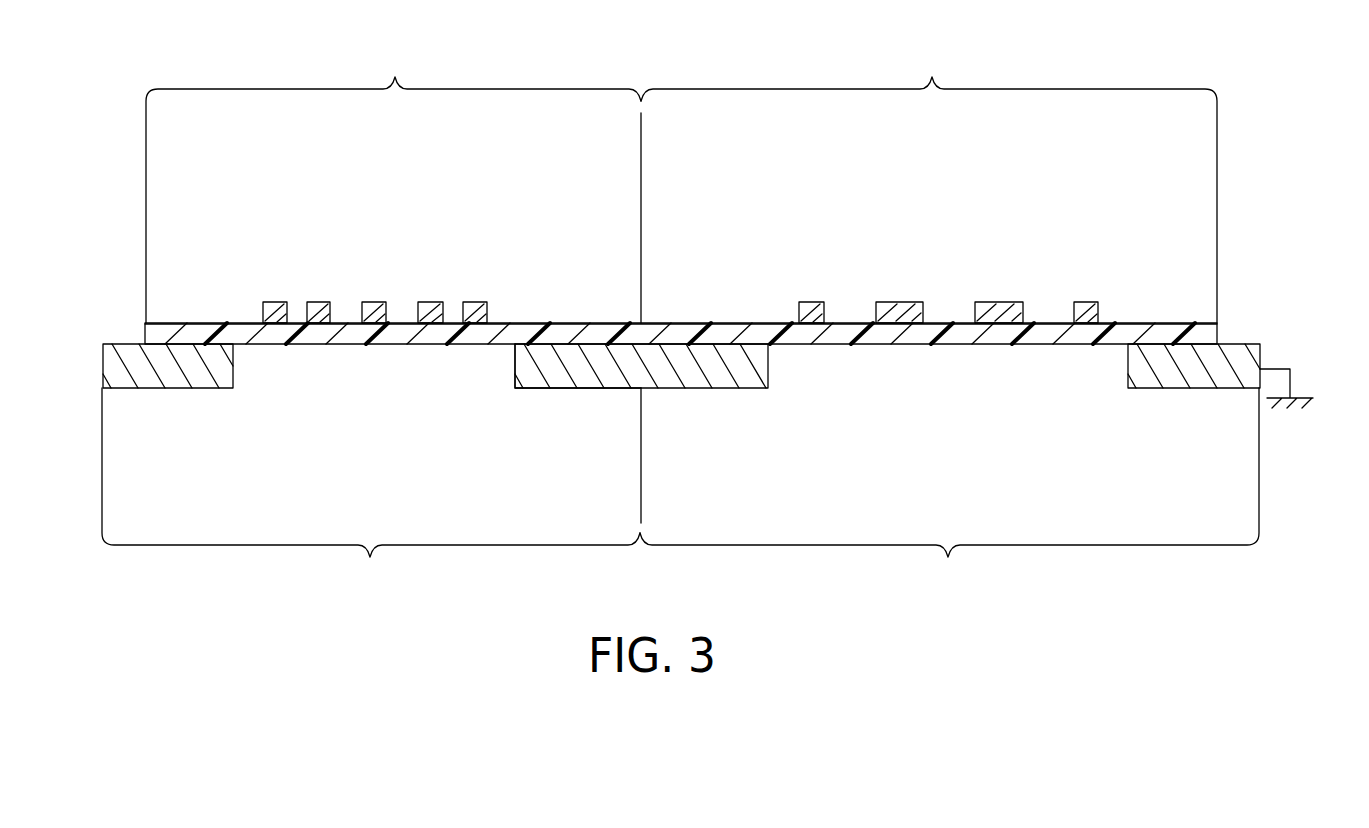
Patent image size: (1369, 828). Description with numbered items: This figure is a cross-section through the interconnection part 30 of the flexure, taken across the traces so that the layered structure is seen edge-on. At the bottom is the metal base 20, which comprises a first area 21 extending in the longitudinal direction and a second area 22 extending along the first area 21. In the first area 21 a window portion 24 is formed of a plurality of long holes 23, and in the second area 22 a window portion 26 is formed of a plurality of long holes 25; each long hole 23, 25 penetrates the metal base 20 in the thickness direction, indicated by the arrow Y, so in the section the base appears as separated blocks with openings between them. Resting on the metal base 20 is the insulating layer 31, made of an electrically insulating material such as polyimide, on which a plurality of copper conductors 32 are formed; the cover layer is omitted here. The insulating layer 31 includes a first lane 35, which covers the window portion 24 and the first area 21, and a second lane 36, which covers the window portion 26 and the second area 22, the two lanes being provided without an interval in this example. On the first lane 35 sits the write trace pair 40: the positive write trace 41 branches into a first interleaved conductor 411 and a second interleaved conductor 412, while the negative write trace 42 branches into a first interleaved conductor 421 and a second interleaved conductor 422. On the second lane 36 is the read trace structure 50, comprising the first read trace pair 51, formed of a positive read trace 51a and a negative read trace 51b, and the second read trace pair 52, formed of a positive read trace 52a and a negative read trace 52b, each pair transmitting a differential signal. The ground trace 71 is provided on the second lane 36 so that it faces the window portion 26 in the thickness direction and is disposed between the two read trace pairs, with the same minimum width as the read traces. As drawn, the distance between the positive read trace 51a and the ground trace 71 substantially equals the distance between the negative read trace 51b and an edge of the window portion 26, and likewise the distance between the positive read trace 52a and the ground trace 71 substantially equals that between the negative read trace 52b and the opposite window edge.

The metal base 20 is at (1220, 368).
The first area 21 is at (949, 492).
The second area 22 is at (371, 491).
The long hole 23 is at (1128, 368).
The window portion 24 is at (771, 368).
The long hole 25 is at (233, 372).
The window portion 26 is at (514, 380).
The interconnection part 30 is at (753, 316).
The insulating layer 31 is at (1160, 338).
The conductor 32 is at (1108, 312).
The first lane 35 is at (929, 183).
The second lane 36 is at (393, 183).
The write trace pair 40 is at (953, 249).
The positive write trace 41 is at (992, 249).
The negative write trace 42 is at (930, 250).
The first interleaved conductor 411 is at (902, 300).
The second interleaved conductor 412 is at (1088, 300).
The first interleaved conductor 421 is at (1003, 300).
The second interleaved conductor 422 is at (812, 300).
The read trace structure 50 is at (378, 218).
The first read trace pair 51 is at (463, 248).
The positive read trace 51a is at (429, 300).
The negative read trace 51b is at (476, 300).
The second read trace pair 52 is at (293, 248).
The positive read trace 52a is at (320, 300).
The negative read trace 52b is at (268, 300).
The ground trace 71 is at (373, 300).